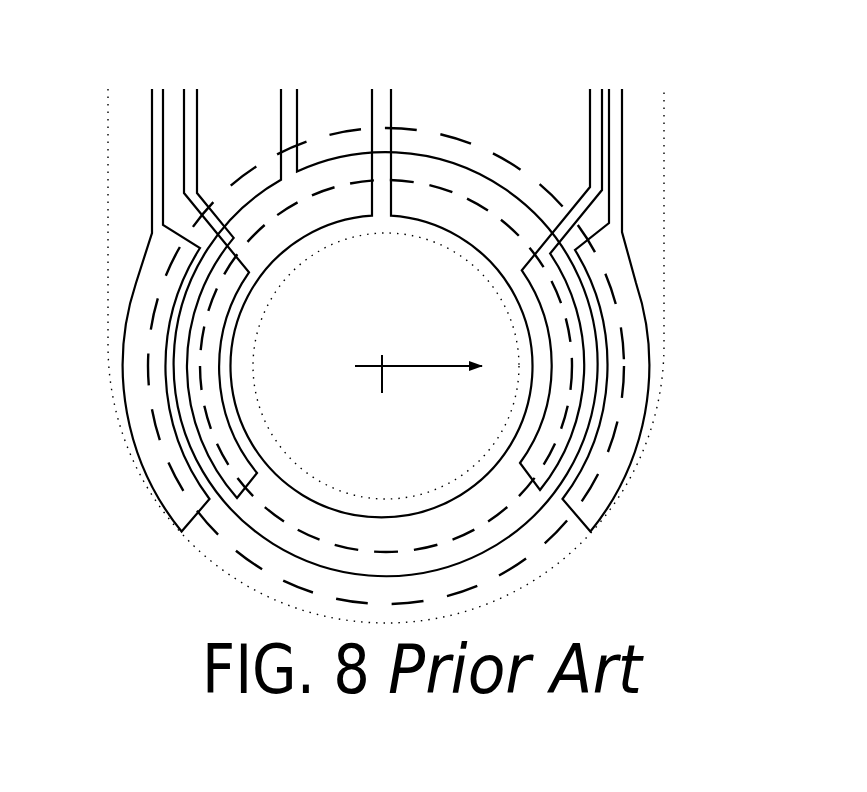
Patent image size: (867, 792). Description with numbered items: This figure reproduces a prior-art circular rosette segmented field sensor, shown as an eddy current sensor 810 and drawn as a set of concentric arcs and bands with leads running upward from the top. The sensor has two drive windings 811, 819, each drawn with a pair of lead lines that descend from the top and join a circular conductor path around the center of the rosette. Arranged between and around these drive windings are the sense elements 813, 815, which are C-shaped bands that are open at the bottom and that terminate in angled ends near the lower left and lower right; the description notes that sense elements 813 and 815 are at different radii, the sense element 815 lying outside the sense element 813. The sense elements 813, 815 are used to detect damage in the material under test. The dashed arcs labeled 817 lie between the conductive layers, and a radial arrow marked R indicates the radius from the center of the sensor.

The eddy current sensor 810 is at (80, 87).
The drive winding 811 is at (398, 113).
The sense element 813 is at (243, 493).
The sense element 815 is at (128, 302).
The dielectric layers 817 is at (150, 377).
The drive winding 819 is at (305, 98).